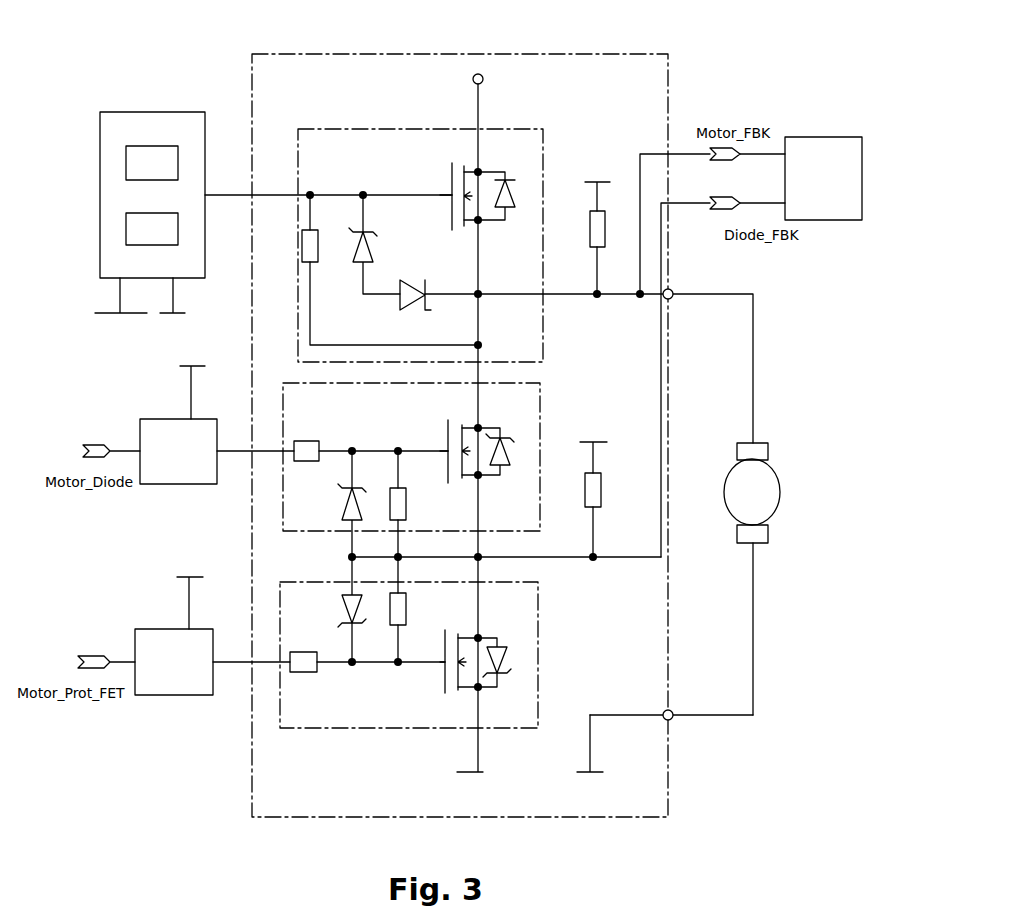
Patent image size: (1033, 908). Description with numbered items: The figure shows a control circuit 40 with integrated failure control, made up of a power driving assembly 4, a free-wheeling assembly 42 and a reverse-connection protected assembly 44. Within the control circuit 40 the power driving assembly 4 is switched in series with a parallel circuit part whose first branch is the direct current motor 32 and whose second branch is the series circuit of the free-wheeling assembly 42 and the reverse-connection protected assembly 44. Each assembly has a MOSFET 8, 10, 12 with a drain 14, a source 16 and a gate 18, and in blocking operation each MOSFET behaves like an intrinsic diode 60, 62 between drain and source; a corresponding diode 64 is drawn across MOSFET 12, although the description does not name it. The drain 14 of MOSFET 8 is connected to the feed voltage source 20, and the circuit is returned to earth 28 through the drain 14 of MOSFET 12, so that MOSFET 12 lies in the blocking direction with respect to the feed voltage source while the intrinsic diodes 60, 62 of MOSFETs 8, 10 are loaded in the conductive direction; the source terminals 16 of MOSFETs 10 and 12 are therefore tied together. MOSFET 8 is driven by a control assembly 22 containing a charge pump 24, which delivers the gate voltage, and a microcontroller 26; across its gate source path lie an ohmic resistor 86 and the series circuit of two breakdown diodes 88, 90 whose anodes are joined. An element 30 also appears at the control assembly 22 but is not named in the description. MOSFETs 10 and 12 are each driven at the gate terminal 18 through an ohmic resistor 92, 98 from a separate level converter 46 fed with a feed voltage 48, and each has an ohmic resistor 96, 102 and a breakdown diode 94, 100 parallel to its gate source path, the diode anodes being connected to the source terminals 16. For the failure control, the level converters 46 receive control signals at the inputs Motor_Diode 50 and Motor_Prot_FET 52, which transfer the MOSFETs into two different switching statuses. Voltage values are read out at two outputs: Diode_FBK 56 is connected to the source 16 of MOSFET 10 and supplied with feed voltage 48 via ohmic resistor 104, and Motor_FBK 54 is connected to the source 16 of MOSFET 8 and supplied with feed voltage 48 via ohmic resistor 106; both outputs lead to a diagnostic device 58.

The power driving assembly 4 is at (386, 129).
The MOSFET 8 is at (505, 170).
The MOSFET 10 is at (494, 480).
The MOSFET 12 is at (498, 690).
The drain terminal 14 is at (466, 170).
The source terminal 16 is at (464, 230).
The gate terminal 18 is at (450, 186).
The feed voltage source 20 is at (473, 80).
The control assembly 22 is at (190, 112).
The charge pump 24 is at (126, 162).
The microcontroller 26 is at (126, 227).
The earth 28 is at (173, 313).
The ground 30 is at (120, 313).
The direct current motor 32 is at (726, 478).
The control circuit 40 is at (598, 54).
The free-wheeling assembly 42 is at (296, 531).
The reverse-connection protected assembly 44 is at (300, 728).
The level converter 46 is at (164, 419).
The feed voltage 48 is at (191, 366).
The Motor_Diode input 50 is at (100, 445).
The Motor_Prot_FET input 52 is at (90, 654).
The Motor_FBK output 54 is at (718, 162).
The Diode_FBK output 56 is at (716, 210).
The diagnostic device 58 is at (800, 137).
The intrinsic diode 60 is at (511, 194).
The intrinsic diode 62 is at (504, 438).
The zener diode 64 is at (504, 640).
The ohmic resistor 86 is at (302, 244).
The breakdown diode 88 is at (354, 264).
The breakdown diode 90 is at (404, 306).
The ohmic resistor 92 is at (300, 441).
The breakdown diode 94 is at (346, 512).
The ohmic resistor 96 is at (390, 504).
The ohmic resistor 98 is at (316, 672).
The breakdown diode 100 is at (332, 628).
The ohmic resistor 102 is at (390, 636).
The ohmic resistor 104 is at (602, 490).
The ohmic resistor 106 is at (605, 240).